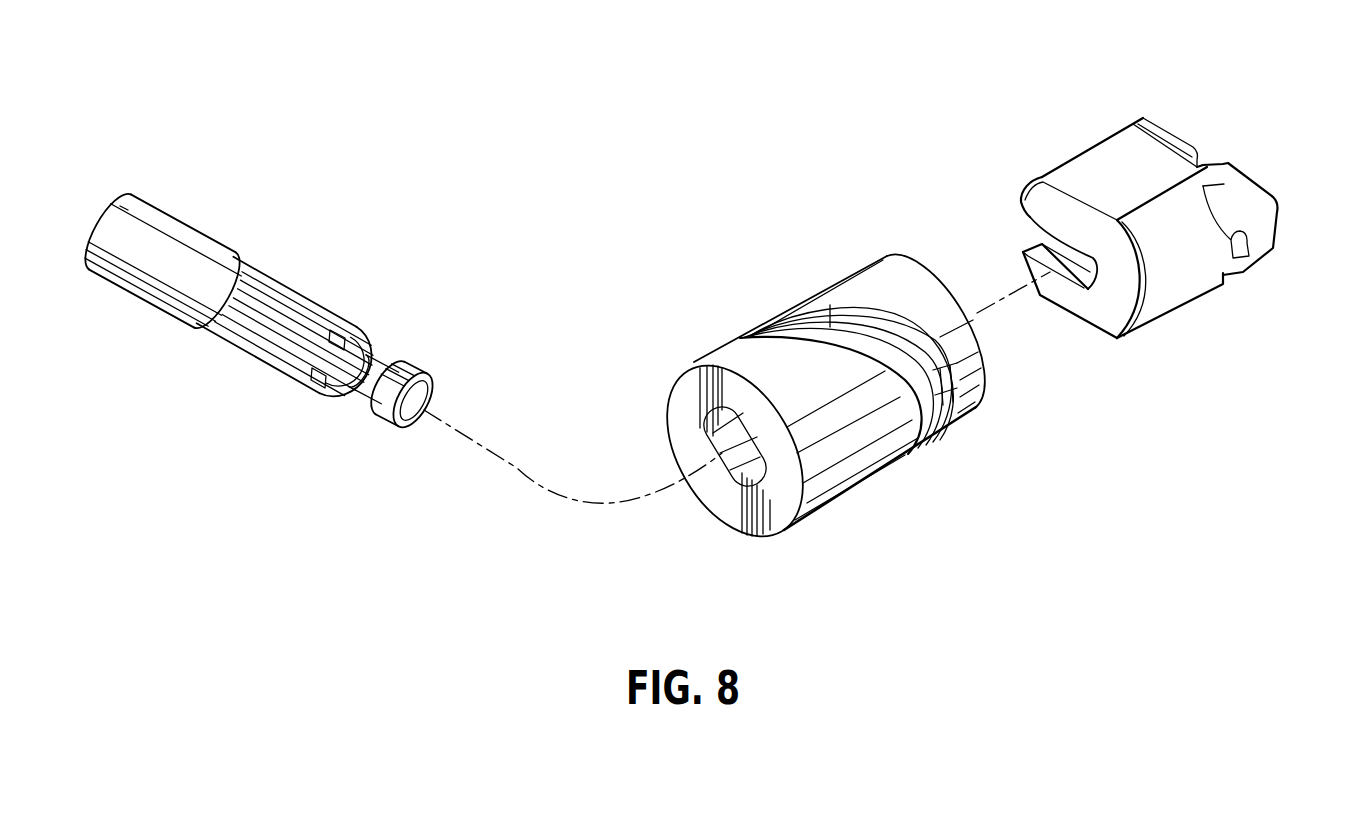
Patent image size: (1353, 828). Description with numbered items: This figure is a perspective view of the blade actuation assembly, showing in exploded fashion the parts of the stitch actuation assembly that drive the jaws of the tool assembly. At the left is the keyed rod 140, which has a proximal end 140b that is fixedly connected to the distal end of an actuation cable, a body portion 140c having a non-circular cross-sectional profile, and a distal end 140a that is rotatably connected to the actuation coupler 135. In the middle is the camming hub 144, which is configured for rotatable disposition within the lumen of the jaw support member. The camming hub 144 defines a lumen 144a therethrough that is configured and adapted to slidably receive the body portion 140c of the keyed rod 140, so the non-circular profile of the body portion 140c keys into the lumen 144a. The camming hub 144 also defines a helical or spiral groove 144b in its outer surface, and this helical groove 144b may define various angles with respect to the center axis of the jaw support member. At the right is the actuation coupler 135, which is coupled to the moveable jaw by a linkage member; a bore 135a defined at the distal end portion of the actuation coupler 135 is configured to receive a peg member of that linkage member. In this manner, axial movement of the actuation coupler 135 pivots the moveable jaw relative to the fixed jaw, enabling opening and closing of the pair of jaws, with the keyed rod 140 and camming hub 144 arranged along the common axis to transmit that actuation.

The keyed rod 140 is at (255, 238).
The distal end 140a is at (413, 370).
The proximal end 140b is at (120, 282).
The body portion 140c is at (270, 360).
The camming hub 144 is at (818, 290).
The lumen 144a is at (733, 492).
The helical groove 144b is at (953, 398).
The actuation coupler 135 is at (1114, 156).
The bore 135a is at (1236, 250).